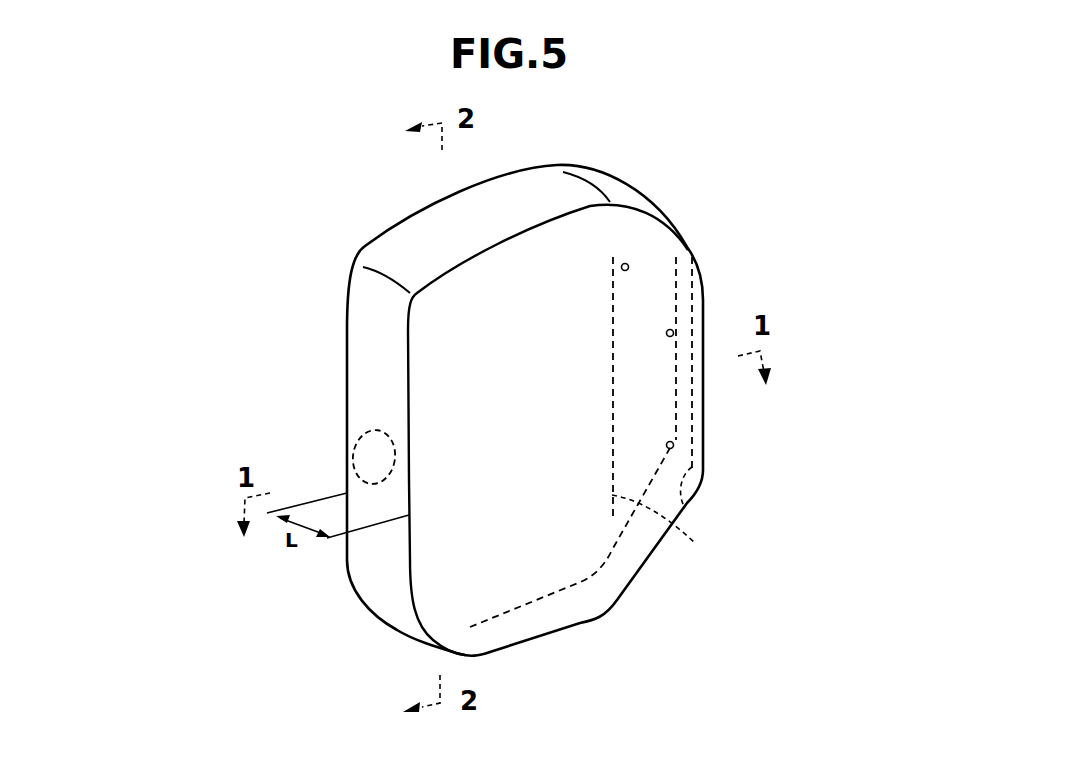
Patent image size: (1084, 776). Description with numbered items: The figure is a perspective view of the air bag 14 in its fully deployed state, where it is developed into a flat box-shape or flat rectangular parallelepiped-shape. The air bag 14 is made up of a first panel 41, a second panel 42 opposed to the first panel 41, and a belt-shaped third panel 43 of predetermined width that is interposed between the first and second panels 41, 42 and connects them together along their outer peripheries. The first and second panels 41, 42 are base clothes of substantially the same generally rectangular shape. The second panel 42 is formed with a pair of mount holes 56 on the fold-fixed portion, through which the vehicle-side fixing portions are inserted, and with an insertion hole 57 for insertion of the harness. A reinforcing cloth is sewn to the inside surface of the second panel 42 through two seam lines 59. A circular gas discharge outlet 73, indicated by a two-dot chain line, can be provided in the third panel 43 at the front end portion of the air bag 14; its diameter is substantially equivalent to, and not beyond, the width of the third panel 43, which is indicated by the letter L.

The air bag 14 is at (364, 189).
The first panel 41 is at (460, 390).
The second panel 42 is at (548, 580).
The third panel 43 is at (370, 578).
The mount holes 56 is at (672, 331).
The insertion hole 57 is at (628, 264).
The seam lines 59 is at (695, 543).
The gas discharge outlet 73 is at (353, 443).